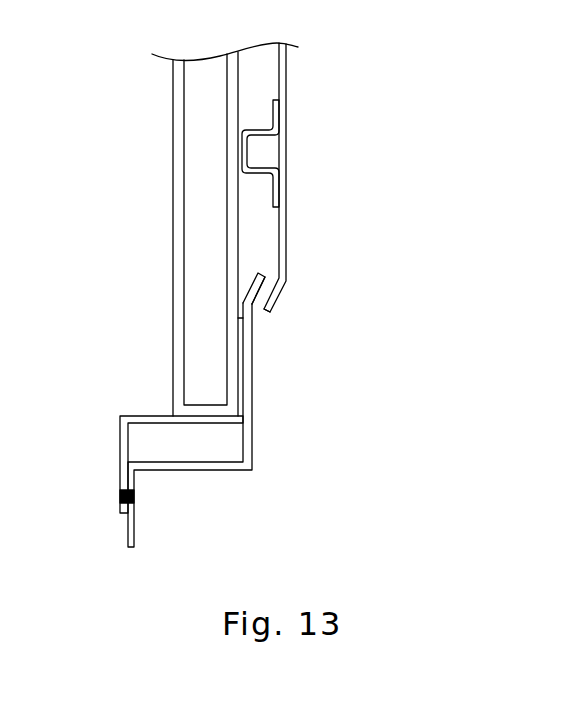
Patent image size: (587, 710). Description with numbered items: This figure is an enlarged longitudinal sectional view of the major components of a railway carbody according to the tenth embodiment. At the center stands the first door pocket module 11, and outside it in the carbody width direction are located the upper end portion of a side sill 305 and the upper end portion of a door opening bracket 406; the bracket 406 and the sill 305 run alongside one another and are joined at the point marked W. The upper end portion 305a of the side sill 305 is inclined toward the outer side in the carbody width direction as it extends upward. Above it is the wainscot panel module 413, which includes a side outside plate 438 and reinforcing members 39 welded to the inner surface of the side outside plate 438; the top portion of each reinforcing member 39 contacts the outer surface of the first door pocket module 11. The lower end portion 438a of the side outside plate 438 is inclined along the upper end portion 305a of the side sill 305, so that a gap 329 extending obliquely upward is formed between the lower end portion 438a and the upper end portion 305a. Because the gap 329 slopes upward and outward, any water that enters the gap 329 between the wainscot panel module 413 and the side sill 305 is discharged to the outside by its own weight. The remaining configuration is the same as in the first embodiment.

The first door pocket module 11 is at (172, 153).
The reinforcing member 39 is at (262, 168).
The side outside plate 438 is at (287, 248).
The wainscot panel module 413 is at (363, 177).
The lower end portion of side outside plate 438a is at (274, 299).
The side sill 305 is at (188, 472).
The upper end portion of side sill 305a is at (250, 287).
The gap 329 is at (257, 305).
The door opening bracket 406 is at (120, 445).
The weld W is at (120, 497).